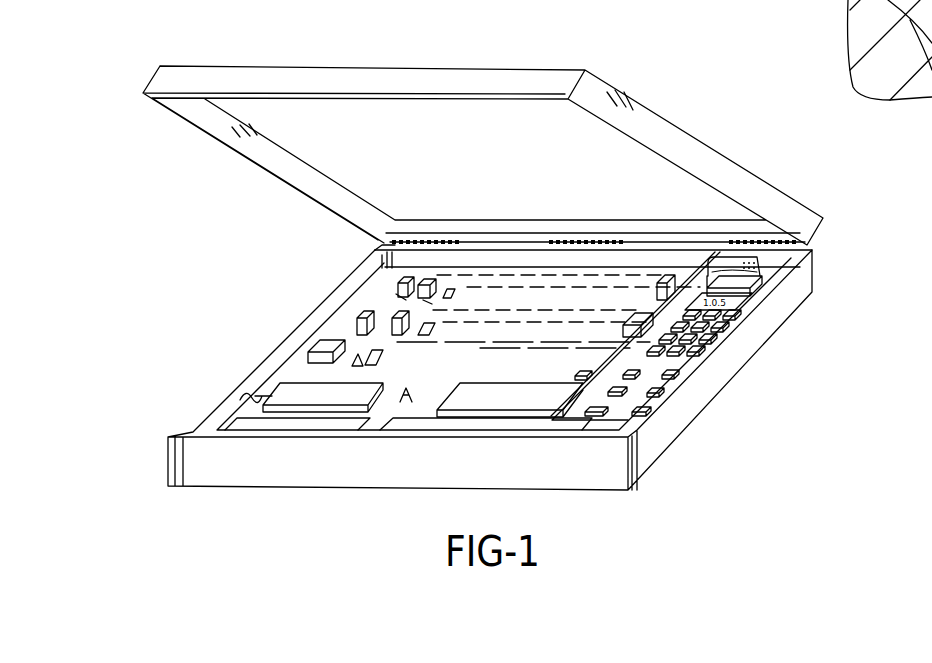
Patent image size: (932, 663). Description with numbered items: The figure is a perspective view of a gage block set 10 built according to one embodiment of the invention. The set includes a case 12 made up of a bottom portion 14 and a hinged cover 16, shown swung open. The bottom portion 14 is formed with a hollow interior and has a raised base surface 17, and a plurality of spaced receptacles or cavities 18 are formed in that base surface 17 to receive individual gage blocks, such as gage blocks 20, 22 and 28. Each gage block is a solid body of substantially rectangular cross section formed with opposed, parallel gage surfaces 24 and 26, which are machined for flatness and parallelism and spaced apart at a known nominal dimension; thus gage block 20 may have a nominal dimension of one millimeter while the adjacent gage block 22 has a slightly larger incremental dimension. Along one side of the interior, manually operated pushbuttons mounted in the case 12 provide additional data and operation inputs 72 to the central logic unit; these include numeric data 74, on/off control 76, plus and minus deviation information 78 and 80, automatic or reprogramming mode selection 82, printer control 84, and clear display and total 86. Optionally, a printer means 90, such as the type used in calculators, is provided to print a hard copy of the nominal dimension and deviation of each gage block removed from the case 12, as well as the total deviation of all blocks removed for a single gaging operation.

The gage block set 10 is at (698, 72).
The case 12 is at (293, 456).
The bottom portion 14 is at (290, 352).
The hinged cover 16 is at (247, 165).
The raised base surface 17 is at (288, 386).
The receptacles or cavities 18 is at (357, 325).
The gage block 20 is at (393, 278).
The gage block 22 is at (440, 272).
The gage surface 24 is at (396, 294).
The gage surface 26 is at (423, 300).
The gage block 28 is at (268, 400).
The data and operation inputs 72 is at (738, 362).
The numeric data input 74 is at (730, 327).
The on/off control 76 is at (700, 375).
The plus deviation input 78 is at (600, 395).
The minus deviation input 80 is at (680, 378).
The automatic or reprogramming mode selection 82 is at (622, 370).
The printer control 84 is at (597, 418).
The clear display and total input 86 is at (648, 416).
The printer means 90 is at (812, 267).